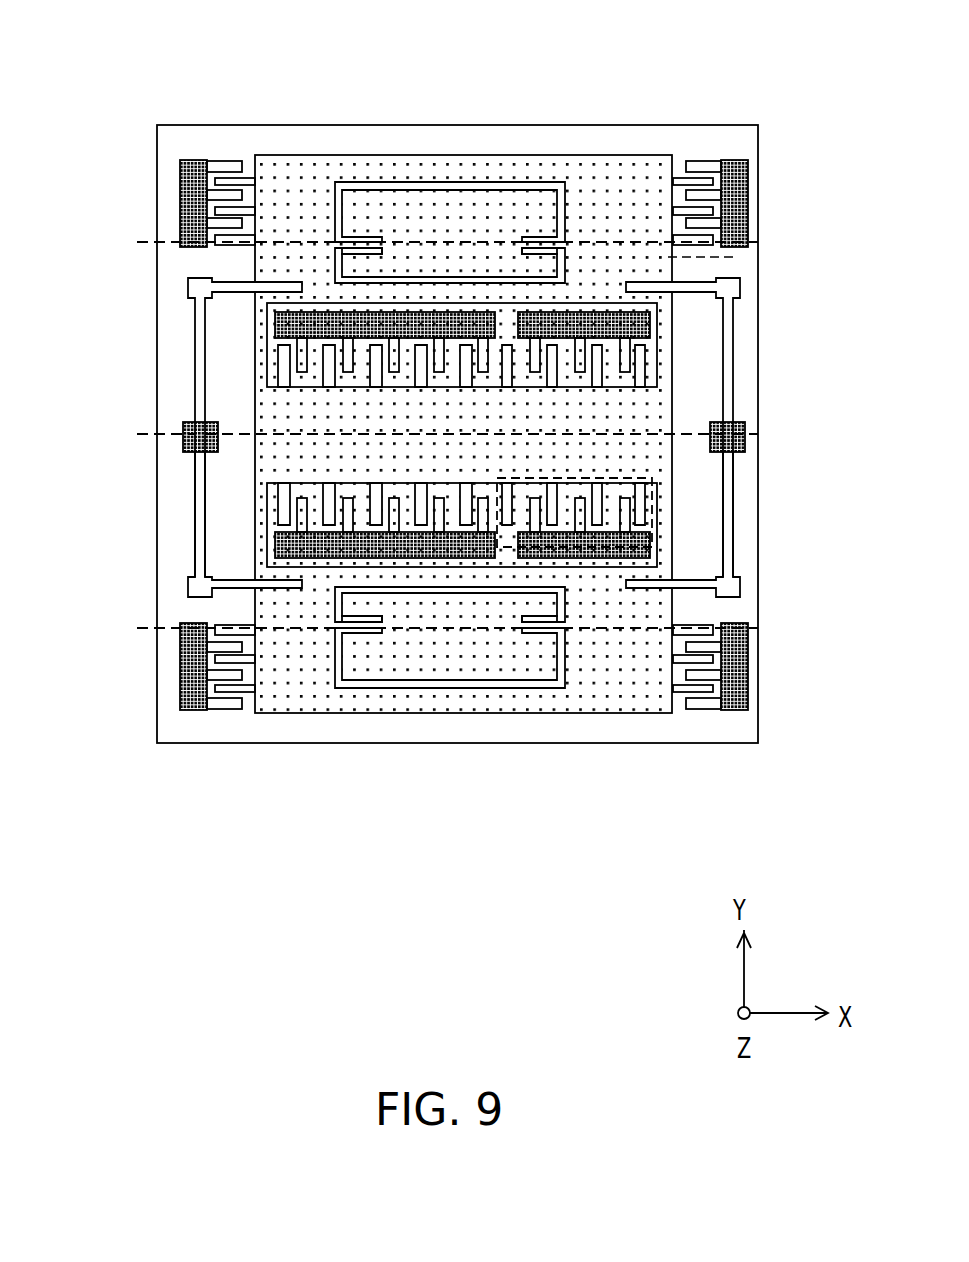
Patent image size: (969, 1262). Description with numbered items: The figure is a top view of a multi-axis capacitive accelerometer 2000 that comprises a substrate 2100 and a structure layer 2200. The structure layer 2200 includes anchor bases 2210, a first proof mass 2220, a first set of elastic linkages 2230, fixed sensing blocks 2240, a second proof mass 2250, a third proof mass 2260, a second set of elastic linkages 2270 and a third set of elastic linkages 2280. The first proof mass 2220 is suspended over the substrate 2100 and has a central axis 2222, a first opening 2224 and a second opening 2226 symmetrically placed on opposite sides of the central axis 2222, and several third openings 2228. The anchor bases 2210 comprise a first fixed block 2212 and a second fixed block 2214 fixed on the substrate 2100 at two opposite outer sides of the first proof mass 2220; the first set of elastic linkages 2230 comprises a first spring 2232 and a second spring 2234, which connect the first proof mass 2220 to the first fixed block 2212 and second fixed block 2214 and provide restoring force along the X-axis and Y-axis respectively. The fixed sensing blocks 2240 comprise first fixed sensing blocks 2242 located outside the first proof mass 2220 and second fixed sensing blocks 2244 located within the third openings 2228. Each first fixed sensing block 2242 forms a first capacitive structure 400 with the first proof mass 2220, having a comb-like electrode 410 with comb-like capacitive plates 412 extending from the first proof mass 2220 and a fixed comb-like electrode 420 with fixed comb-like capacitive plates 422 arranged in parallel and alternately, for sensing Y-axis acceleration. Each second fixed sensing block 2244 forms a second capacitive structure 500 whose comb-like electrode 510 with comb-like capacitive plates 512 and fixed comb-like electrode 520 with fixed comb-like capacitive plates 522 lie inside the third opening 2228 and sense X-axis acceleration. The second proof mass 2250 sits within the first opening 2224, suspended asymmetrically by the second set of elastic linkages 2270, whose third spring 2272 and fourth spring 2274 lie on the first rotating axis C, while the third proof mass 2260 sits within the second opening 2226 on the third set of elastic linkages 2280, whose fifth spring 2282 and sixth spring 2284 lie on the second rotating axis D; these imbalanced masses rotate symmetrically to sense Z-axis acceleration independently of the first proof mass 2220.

The multi-axis capacitive accelerometer 2000 is at (803, 38).
The substrate 2100 is at (182, 138).
The structure layer 2200 is at (222, 105).
The first proof mass 2220 is at (472, 700).
The first opening 2224 is at (340, 217).
The second opening 2226 is at (340, 651).
The third opening 2228 is at (272, 510).
The second proof mass 2250 is at (428, 207).
The third proof mass 2260 is at (543, 652).
The second set of elastic linkages 2270 is at (90, 305).
The third spring 2272 is at (358, 248).
The fourth spring 2274 is at (530, 243).
The third set of elastic linkages 2280 is at (450, 835).
The fifth spring 2282 is at (363, 627).
The sixth spring 2284 is at (538, 628).
The anchor bases 2210 is at (743, 443).
The first fixed block 2212 is at (187, 427).
The second fixed block 2214 is at (683, 437).
The central axis 2222 is at (149, 436).
The first set of elastic linkages 2230 is at (457, 514).
The first spring 2232 is at (197, 537).
The second spring 2234 is at (728, 553).
The fixed sensing blocks 2240 is at (705, 713).
The first fixed sensing block 2242 is at (745, 660).
The second fixed sensing block 2244 is at (637, 553).
The first capacitive structure 400 is at (750, 189).
The comb-like electrode 410 is at (665, 848).
The comb-like capacitive plates 412 is at (672, 668).
The fixed comb-like electrode 420 is at (768, 798).
The fixed comb-like capacitive plates 422 is at (713, 647).
The second capacitive structure 500 is at (653, 503).
The comb-like electrode 510 is at (822, 295).
The comb-like capacitive plates 512 is at (642, 363).
The fixed comb-like electrode 520 is at (628, 73).
The fixed comb-like capacitive plates 522 is at (625, 345).